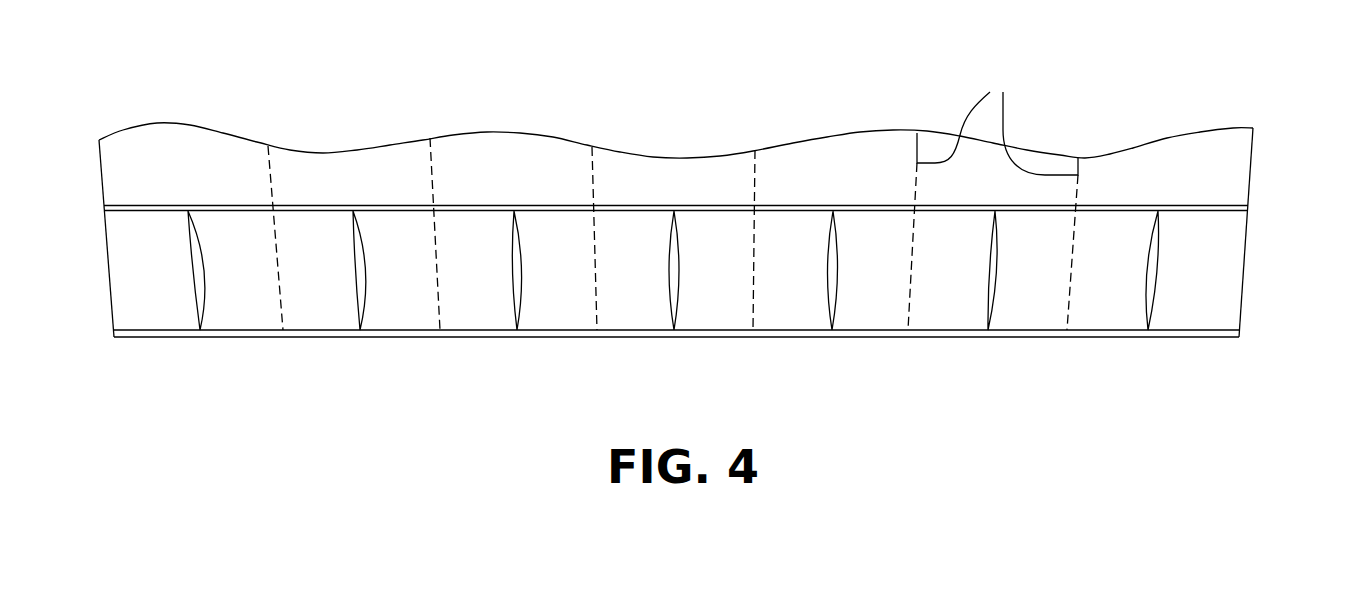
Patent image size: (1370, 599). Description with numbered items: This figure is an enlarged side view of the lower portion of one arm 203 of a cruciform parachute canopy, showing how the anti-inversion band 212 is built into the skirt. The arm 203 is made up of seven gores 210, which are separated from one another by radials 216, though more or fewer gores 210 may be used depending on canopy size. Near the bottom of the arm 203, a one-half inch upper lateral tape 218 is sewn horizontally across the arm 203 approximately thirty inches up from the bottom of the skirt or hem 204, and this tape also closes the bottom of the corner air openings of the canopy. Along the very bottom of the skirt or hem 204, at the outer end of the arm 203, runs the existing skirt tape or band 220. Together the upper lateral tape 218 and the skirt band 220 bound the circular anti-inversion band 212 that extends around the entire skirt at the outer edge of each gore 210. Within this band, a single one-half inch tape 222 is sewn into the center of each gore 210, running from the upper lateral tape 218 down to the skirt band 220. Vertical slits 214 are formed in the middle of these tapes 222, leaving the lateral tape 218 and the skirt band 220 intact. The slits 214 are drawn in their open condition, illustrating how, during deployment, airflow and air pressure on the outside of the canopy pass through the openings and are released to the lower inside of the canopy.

The arm 203 is at (830, 155).
The skirt or hem 204 is at (227, 337).
The gore 210 is at (303, 152).
The anti-inversion band 212 is at (1227, 282).
The vertical slits 214 is at (838, 258).
The radials 216 is at (997, 117).
The upper lateral tape 218 is at (1130, 205).
The skirt tape or band 220 is at (1103, 337).
The tape 222 is at (510, 267).